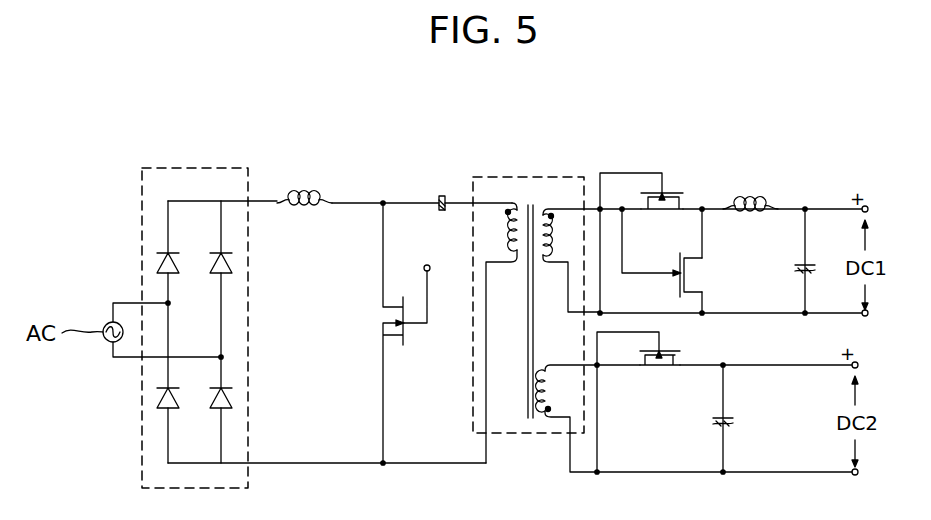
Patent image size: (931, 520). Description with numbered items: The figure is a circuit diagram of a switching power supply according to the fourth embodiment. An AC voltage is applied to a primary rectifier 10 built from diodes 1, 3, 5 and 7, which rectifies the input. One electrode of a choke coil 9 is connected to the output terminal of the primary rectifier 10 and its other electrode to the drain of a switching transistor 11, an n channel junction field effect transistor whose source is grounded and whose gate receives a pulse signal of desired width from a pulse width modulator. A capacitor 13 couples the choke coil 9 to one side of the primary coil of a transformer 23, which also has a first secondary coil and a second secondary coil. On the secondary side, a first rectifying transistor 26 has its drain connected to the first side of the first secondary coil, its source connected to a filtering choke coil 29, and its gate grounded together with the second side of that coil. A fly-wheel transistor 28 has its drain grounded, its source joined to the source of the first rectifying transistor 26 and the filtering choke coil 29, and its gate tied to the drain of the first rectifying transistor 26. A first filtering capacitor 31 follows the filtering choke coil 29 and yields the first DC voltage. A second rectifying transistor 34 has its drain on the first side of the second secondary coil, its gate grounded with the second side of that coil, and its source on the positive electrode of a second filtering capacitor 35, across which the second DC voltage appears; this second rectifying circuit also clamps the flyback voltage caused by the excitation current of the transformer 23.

The diode 1 is at (158, 266).
The diode 3 is at (232, 268).
The diode 5 is at (158, 400).
The diode 7 is at (232, 400).
The choke coil 9 is at (306, 199).
The primary rectifier 10 is at (199, 168).
The switching transistor 11 is at (383, 323).
The capacitor 13 is at (442, 196).
The transformer 23 is at (527, 177).
The first rectifying transistor 26 is at (676, 190).
The fly-wheel transistor 28 is at (703, 262).
The filtering choke coil 29 is at (758, 205).
The first filtering capacitor 31 is at (797, 274).
The second rectifying transistor 34 is at (668, 368).
The second filtering capacitor 35 is at (731, 420).